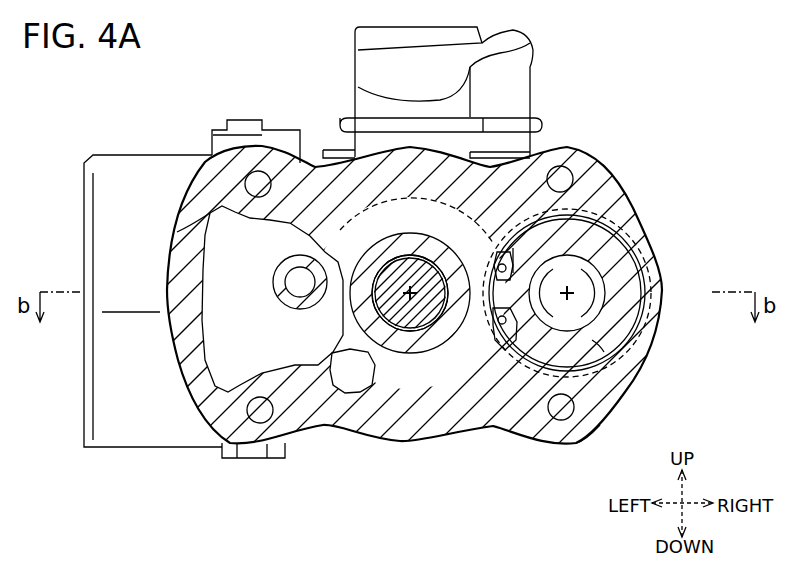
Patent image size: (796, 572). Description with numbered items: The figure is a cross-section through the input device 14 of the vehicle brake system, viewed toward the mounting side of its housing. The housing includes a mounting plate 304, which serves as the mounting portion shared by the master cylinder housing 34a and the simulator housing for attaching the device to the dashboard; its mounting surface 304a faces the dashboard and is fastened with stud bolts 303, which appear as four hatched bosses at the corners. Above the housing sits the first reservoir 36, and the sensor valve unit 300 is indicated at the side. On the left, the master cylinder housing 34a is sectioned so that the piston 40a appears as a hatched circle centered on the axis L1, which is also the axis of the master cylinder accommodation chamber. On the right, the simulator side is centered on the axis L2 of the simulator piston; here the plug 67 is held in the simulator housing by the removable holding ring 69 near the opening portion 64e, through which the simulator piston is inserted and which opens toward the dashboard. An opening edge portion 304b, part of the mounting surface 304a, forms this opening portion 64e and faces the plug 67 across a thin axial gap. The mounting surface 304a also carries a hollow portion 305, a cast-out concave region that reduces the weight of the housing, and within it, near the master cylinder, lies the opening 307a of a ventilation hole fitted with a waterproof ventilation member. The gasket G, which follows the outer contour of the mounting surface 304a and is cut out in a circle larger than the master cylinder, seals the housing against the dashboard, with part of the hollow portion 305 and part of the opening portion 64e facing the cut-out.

The input device 14 is at (603, 73).
The first reservoir 36 is at (353, 70).
The sensor valve unit 300 is at (146, 160).
The stud bolts 303 is at (258, 180).
The mounting plate 304 is at (665, 333).
The mounting surface 304a is at (612, 393).
The opening edge portion 304b is at (600, 345).
The hollow portion 305 is at (178, 232).
The opening of the ventilation hole 307a is at (300, 282).
The master cylinder housing 34a is at (405, 310).
The piston 40a is at (445, 330).
The opening portion 64e is at (492, 335).
The plug 67 is at (618, 288).
The holding ring 69 is at (637, 222).
The axis L1 is at (410, 295).
The axis L2 is at (567, 295).
The gasket G is at (348, 430).